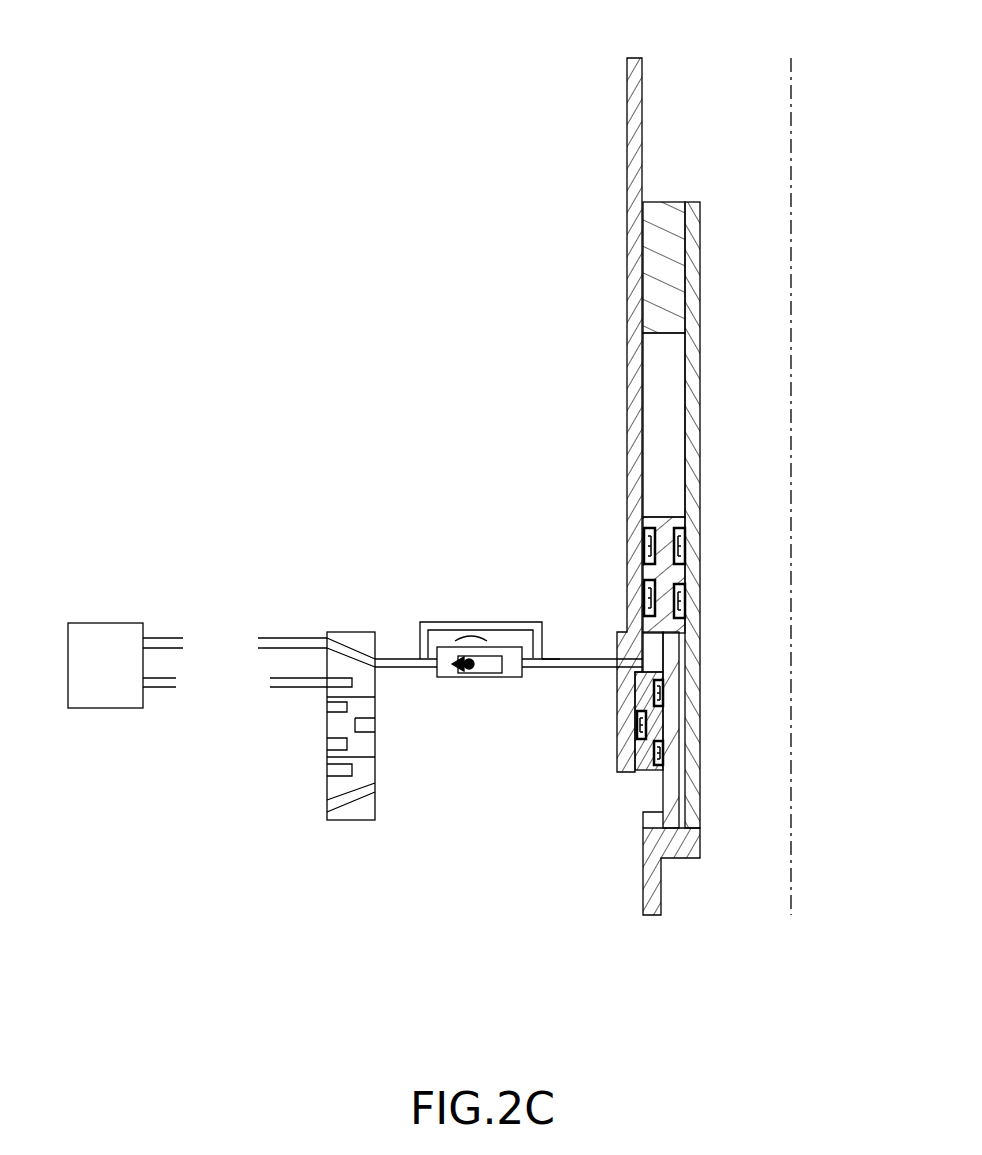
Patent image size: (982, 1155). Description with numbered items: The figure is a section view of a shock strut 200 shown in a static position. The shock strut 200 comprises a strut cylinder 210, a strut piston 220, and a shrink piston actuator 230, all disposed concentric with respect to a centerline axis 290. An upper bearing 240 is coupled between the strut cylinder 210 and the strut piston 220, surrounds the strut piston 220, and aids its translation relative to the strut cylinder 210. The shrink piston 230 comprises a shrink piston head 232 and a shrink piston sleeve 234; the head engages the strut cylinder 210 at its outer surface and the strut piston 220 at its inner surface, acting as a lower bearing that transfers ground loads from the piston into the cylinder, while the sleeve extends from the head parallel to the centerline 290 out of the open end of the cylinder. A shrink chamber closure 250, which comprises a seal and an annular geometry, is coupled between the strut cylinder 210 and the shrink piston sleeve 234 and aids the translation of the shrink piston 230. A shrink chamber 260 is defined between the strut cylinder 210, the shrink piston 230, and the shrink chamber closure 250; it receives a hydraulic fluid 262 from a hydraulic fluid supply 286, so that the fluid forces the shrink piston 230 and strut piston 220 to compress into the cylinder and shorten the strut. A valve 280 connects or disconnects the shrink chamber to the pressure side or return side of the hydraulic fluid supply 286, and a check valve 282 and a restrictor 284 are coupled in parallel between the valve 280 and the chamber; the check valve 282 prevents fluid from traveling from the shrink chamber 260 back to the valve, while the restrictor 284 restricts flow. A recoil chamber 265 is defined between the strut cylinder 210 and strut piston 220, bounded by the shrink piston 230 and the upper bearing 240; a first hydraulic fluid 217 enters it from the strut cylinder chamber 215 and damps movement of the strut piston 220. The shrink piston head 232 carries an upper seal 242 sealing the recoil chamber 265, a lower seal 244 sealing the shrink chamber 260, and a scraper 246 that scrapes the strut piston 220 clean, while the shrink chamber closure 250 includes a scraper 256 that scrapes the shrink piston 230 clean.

The shock strut 200 is at (388, 46).
The strut cylinder 210 is at (627, 103).
The strut cylinder chamber 215 is at (743, 106).
The hydraulic fluid 217 is at (743, 145).
The strut piston 220 is at (700, 298).
The shrink piston actuator 230 is at (670, 727).
The shrink piston head 232 is at (658, 524).
The shrink piston sleeve 234 is at (668, 790).
The upper bearing 240 is at (656, 210).
The upper seal 242 is at (645, 527).
The lower seal 244 is at (650, 587).
The scraper 246 is at (680, 598).
The shrink chamber closure 250 is at (632, 760).
The scraper 256 is at (660, 750).
The shrink chamber 260 is at (660, 658).
The hydraulic fluid 262 is at (652, 656).
The recoil chamber 265 is at (648, 388).
The valve 280 is at (347, 821).
The check valve 282 is at (469, 680).
The restrictor 284 is at (487, 611).
The hydraulic fluid supply 286 is at (100, 709).
The centerline axis 290 is at (791, 146).